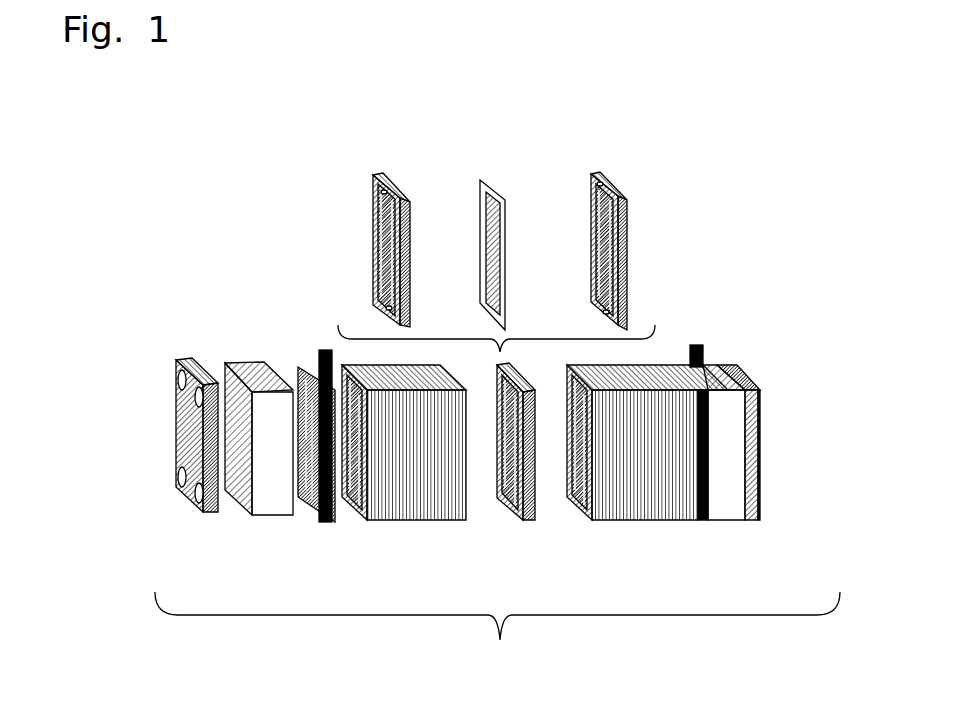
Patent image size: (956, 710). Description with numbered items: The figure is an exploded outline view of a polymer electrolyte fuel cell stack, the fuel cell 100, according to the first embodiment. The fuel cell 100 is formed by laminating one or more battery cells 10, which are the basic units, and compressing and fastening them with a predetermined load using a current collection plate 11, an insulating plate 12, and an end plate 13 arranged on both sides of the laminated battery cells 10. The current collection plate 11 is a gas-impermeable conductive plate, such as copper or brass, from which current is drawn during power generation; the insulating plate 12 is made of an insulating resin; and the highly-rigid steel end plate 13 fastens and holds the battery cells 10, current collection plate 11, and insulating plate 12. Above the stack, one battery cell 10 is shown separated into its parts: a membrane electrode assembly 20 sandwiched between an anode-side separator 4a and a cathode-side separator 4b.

The fuel cell 100 is at (497, 634).
The battery cell 10 is at (523, 522).
The current collection plate 11 is at (328, 523).
The insulating plate 12 is at (268, 493).
The end plate 13 is at (210, 505).
The membrane electrode assembly 20 is at (492, 190).
The anode-side separator 4a is at (385, 177).
The cathode-side separator 4b is at (603, 177).